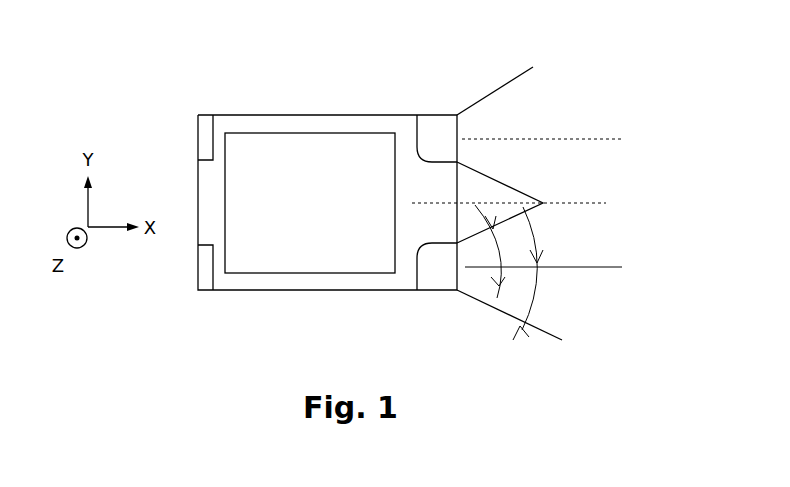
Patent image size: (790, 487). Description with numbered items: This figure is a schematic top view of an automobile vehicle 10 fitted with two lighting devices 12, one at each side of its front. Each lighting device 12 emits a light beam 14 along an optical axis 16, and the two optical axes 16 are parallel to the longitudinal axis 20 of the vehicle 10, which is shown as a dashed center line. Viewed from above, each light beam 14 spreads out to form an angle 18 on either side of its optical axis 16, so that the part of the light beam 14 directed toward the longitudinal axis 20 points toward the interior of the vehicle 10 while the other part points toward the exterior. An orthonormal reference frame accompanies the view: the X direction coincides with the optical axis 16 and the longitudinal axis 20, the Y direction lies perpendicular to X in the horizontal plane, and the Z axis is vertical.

The automobile vehicle 10 is at (327, 202).
The lighting device 12 is at (432, 115).
The light beam 14 is at (515, 64).
The optical axis 16 is at (580, 139).
The angle 18 is at (492, 247).
The longitudinal axis 20 is at (598, 203).